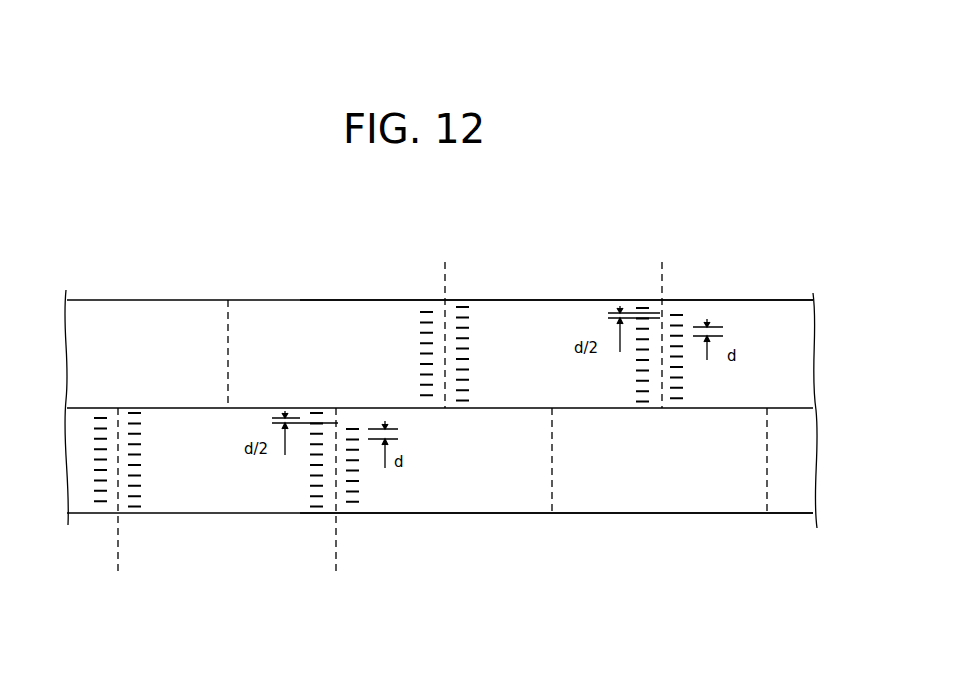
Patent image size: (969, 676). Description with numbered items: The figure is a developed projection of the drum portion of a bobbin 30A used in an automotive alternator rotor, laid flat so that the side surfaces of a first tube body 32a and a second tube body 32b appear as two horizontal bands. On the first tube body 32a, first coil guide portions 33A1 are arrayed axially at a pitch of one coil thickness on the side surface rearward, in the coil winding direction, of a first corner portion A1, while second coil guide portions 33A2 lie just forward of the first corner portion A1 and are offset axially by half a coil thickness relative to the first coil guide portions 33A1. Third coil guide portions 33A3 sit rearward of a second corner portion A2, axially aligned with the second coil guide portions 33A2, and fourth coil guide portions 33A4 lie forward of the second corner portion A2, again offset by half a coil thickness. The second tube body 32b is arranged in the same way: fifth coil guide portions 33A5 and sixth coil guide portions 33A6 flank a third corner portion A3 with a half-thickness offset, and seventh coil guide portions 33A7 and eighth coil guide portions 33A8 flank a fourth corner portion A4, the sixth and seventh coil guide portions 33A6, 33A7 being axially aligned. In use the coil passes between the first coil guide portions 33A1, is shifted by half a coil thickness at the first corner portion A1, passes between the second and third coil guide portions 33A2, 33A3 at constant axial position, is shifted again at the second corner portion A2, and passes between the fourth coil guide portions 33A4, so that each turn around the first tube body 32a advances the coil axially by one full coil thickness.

The bobbin 30A is at (197, 217).
The first tube body 32a is at (780, 316).
The second tube body 32b is at (785, 505).
The first coil guide portions 33A1 is at (427, 410).
The second coil guide portions 33A2 is at (462, 410).
The third coil guide portions 33A3 is at (643, 410).
The fourth coil guide portions 33A4 is at (677, 410).
The fifth coil guide portions 33A5 is at (105, 408).
The sixth coil guide portions 33A6 is at (135, 408).
The seventh coil guide portions 33A7 is at (320, 408).
The eighth coil guide portions 33A8 is at (355, 408).
The first corner portion A1 is at (445, 324).
The second corner portion A2 is at (648, 324).
The third corner portion A3 is at (112, 506).
The fourth corner portion A4 is at (332, 506).